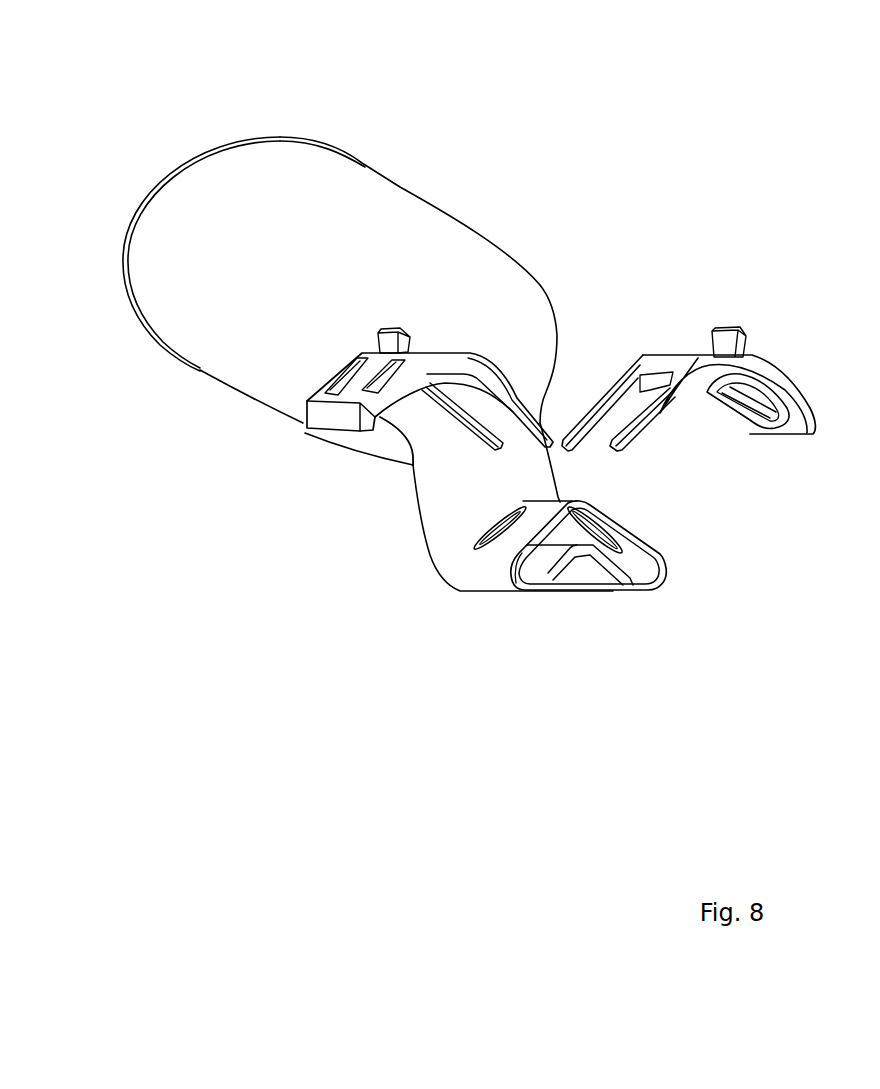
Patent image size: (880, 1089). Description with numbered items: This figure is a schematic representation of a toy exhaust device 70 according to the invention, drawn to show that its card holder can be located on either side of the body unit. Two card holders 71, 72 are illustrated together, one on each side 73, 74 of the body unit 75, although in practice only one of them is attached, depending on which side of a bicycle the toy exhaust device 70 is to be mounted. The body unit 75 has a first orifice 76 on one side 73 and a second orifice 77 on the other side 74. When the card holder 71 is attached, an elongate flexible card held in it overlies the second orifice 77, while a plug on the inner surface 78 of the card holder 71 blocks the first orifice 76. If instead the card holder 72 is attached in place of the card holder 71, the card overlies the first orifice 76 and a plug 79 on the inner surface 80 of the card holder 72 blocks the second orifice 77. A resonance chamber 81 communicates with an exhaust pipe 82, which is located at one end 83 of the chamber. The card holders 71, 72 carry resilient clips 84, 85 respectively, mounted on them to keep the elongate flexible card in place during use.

The toy exhaust device 70 is at (197, 115).
The card holder 71 is at (322, 417).
The card holder 72 is at (798, 408).
The side 73 is at (507, 551).
The side 74 is at (645, 543).
The body unit 75 is at (617, 582).
The first orifice 76 is at (500, 528).
The second orifice 77 is at (598, 533).
The inner surface 78 is at (413, 453).
The plug 79 is at (747, 406).
The inner surface 80 is at (798, 415).
The resonance chamber 81 is at (543, 563).
The exhaust pipe 82 is at (383, 222).
The end 83 is at (427, 537).
The resilient clip 84 is at (413, 336).
The resilient clip 85 is at (718, 344).